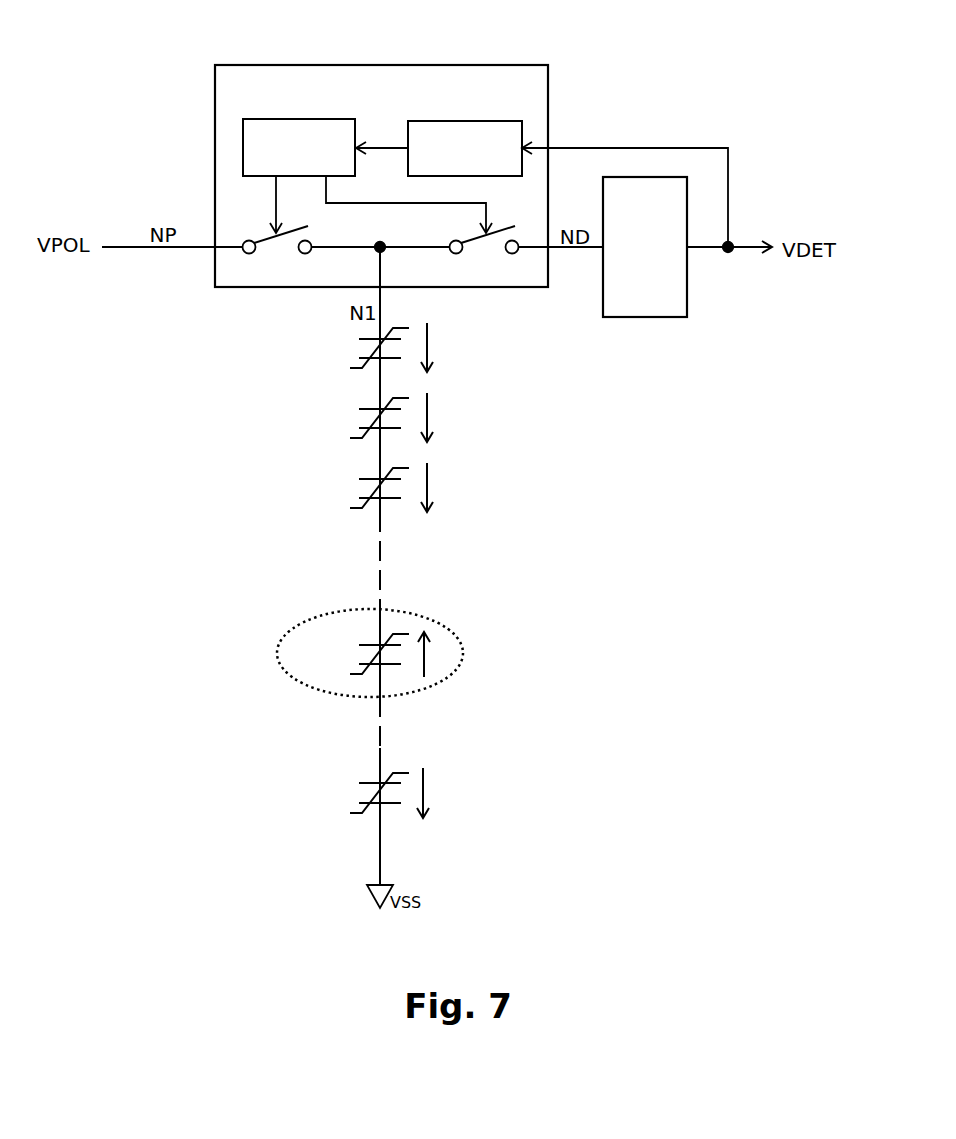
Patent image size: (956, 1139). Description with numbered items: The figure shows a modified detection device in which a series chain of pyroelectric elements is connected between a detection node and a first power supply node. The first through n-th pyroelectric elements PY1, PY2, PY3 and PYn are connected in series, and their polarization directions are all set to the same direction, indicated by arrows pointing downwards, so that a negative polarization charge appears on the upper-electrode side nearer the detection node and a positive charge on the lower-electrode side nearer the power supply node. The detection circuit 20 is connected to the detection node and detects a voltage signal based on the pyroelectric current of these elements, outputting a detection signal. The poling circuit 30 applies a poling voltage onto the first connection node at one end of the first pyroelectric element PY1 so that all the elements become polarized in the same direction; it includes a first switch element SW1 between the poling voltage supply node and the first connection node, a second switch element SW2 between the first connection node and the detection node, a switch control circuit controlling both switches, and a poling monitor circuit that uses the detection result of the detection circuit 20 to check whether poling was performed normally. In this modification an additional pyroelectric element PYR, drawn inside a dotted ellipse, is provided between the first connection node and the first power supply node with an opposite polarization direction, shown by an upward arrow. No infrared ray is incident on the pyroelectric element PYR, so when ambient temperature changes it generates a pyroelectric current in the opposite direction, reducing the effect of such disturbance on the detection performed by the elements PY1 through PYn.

The poling circuit 30 is at (352, 145).
The detection circuit 20 is at (647, 318).
The first switch element SW1 is at (277, 254).
The second switch element SW2 is at (484, 254).
The first pyroelectric element PY1 is at (368, 347).
The second pyroelectric element PY2 is at (368, 417).
The third pyroelectric element PY3 is at (368, 487).
The additional pyroelectric element PYR is at (370, 653).
The n-th pyroelectric element PYn is at (364, 793).